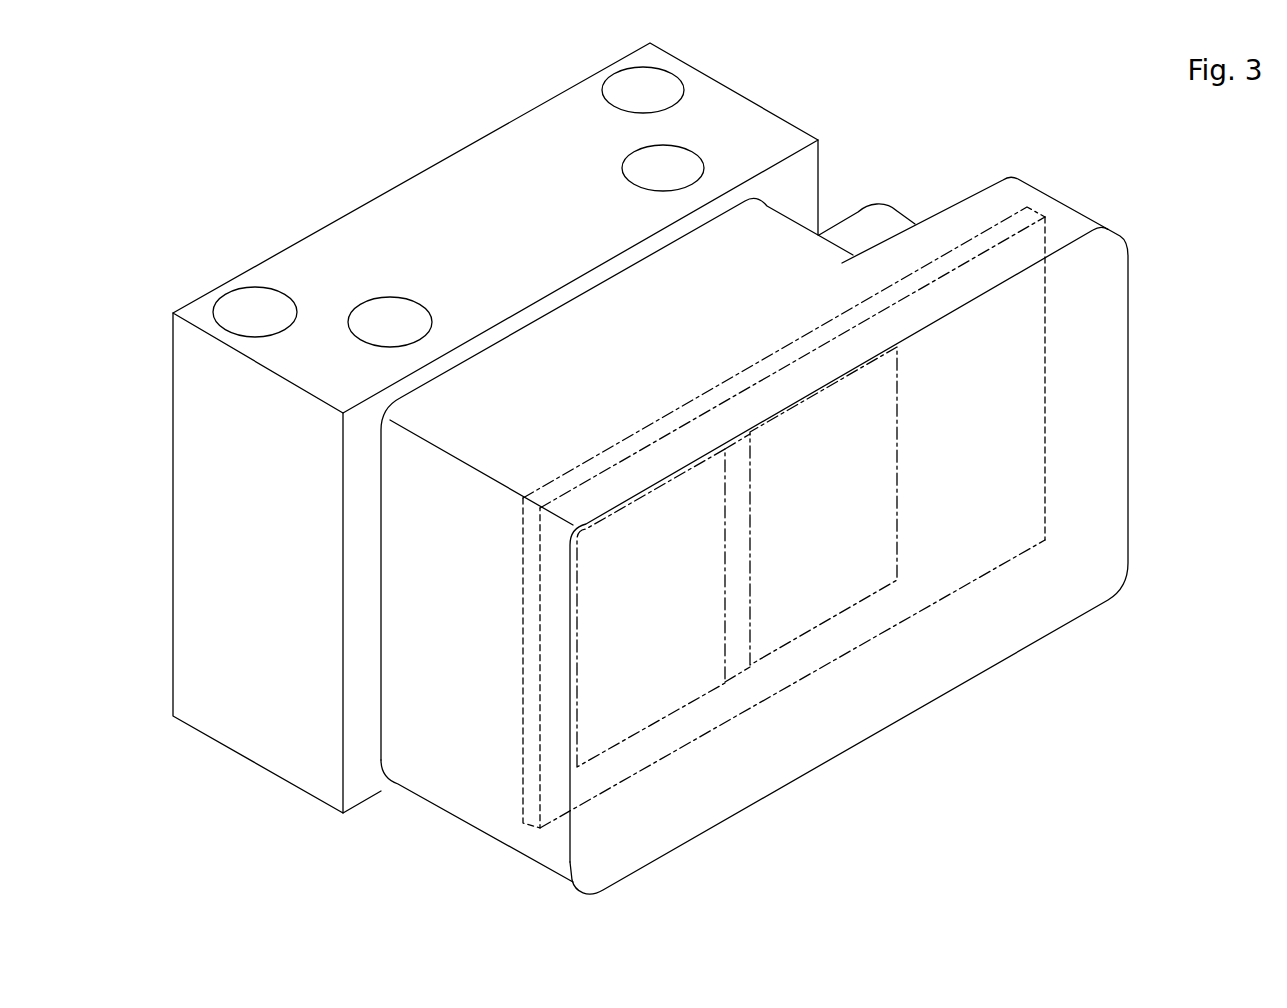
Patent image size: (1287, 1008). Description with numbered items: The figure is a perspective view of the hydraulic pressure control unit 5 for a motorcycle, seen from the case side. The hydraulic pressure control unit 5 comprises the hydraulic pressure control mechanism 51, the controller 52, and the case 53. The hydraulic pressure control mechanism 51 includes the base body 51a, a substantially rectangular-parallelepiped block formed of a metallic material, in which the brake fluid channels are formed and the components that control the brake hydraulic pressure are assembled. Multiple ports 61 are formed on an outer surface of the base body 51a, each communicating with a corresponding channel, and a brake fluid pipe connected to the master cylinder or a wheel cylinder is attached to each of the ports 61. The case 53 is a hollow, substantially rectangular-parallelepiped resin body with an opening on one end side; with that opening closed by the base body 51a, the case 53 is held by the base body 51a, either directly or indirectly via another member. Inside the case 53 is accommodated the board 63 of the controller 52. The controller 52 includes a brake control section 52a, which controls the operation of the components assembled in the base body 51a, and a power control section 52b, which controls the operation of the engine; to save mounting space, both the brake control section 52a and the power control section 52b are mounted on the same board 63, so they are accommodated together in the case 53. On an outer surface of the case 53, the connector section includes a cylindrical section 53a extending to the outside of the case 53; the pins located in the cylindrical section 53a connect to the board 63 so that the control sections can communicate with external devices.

The hydraulic pressure control unit 5 is at (138, 157).
The hydraulic pressure control mechanism 51 is at (803, 100).
The base body 51a is at (720, 103).
The ports 61 is at (640, 175).
The case 53 is at (1107, 194).
The cylindrical section 53a is at (897, 222).
The controller 52 is at (1060, 415).
The brake control section 52a is at (648, 703).
The power control section 52b is at (822, 603).
The board 63 is at (963, 565).